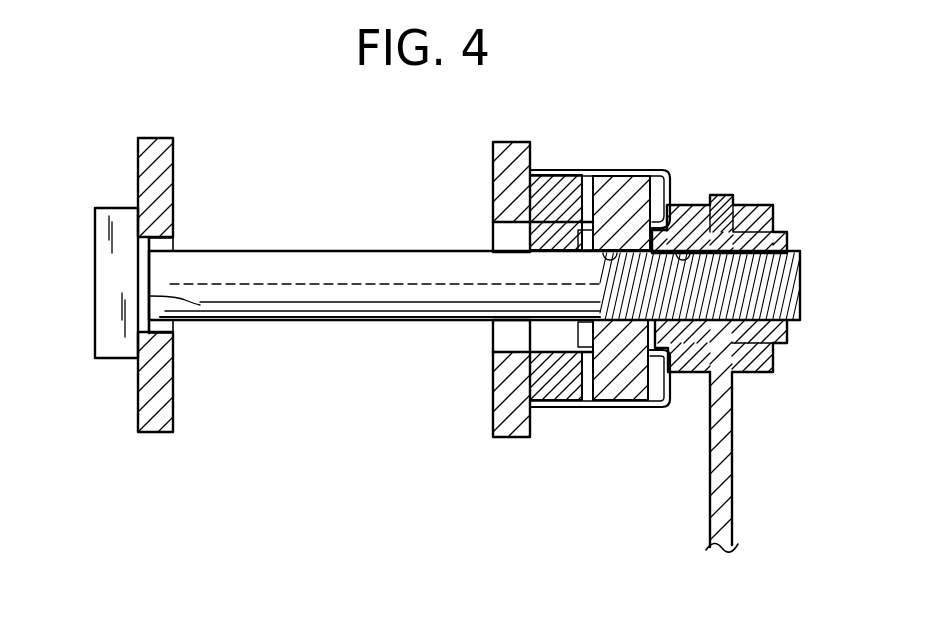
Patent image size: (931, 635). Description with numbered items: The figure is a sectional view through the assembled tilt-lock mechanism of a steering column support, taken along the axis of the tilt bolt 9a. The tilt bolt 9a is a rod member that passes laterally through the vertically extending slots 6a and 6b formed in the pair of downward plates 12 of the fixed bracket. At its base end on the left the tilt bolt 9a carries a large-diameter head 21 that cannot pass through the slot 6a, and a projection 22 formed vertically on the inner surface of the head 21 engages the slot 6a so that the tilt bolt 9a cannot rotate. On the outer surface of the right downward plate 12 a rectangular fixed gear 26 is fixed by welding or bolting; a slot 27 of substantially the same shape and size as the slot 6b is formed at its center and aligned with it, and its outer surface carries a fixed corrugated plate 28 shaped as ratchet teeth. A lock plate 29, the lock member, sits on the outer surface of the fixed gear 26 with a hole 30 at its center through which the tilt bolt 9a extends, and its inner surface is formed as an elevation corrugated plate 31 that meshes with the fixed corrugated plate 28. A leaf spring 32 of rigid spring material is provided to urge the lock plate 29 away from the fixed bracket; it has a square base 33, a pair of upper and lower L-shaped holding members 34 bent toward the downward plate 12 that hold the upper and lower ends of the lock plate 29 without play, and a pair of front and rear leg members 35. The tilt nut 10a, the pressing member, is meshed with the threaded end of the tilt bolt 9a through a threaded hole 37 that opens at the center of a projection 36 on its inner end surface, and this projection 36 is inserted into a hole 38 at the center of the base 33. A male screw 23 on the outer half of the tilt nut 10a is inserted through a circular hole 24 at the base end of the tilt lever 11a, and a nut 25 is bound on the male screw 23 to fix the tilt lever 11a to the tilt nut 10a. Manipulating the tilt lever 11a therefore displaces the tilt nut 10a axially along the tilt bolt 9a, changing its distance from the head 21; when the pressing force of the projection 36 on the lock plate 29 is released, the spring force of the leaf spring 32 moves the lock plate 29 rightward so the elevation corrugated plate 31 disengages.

The head 21 is at (95, 338).
The downward plate 12 is at (173, 152).
The slot 6a is at (162, 250).
The slot 6b is at (494, 346).
The tilt bolt 9a is at (311, 258).
The projection 22 is at (148, 290).
The holding member 34 is at (566, 247).
The base 33 is at (652, 258).
The fixed gear 26 is at (574, 170).
The leaf spring 32 is at (592, 404).
The slot 27 is at (552, 348).
The fixed corrugated plate 28 is at (592, 372).
The lock plate 29 is at (628, 170).
The hole 30 is at (620, 185).
The elevation corrugated plate 31 is at (593, 170).
The leg member 35 is at (549, 170).
The projection 36 is at (672, 350).
The tilt nut 10a is at (813, 194).
The hole 38 is at (681, 250).
The threaded hole 37 is at (702, 213).
The male screw 23 is at (773, 220).
The circular hole 24 is at (737, 343).
The nut 25 is at (773, 372).
The tilt lever 11a is at (724, 500).